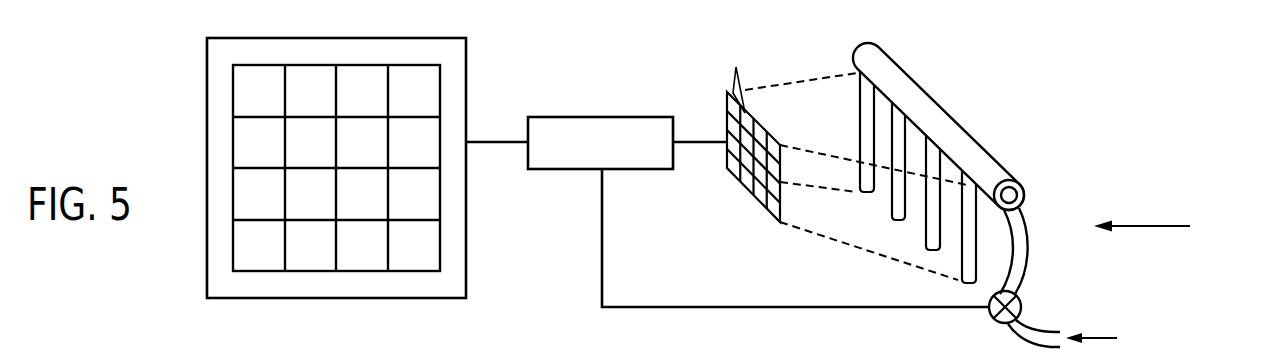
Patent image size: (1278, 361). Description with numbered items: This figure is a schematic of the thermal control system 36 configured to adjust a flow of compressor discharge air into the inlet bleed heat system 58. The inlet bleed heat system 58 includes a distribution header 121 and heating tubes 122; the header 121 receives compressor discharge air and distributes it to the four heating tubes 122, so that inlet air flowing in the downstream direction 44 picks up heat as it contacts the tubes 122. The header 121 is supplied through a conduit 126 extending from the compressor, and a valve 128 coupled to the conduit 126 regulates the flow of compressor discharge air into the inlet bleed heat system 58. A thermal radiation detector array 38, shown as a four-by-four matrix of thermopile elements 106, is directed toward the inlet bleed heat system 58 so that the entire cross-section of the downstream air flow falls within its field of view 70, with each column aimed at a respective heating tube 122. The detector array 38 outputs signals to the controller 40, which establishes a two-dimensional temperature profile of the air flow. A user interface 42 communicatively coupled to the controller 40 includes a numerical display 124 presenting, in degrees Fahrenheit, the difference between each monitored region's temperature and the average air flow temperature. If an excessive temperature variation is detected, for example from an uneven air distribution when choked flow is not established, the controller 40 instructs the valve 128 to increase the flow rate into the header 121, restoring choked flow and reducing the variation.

The thermal control system 36 is at (565, 222).
The thermal radiation detector array 38 is at (760, 200).
The controller 40 is at (604, 117).
The user interface 42 is at (466, 74).
The downstream direction 44 is at (1150, 226).
The inlet bleed heat system 58 is at (972, 66).
The field of view 70 is at (798, 83).
The thermopile elements 106 is at (739, 76).
The distribution header 121 is at (950, 118).
The heating tubes 122 is at (860, 128).
The numerical display 124 is at (233, 90).
The conduit 126 is at (1030, 245).
The valve 128 is at (1022, 303).